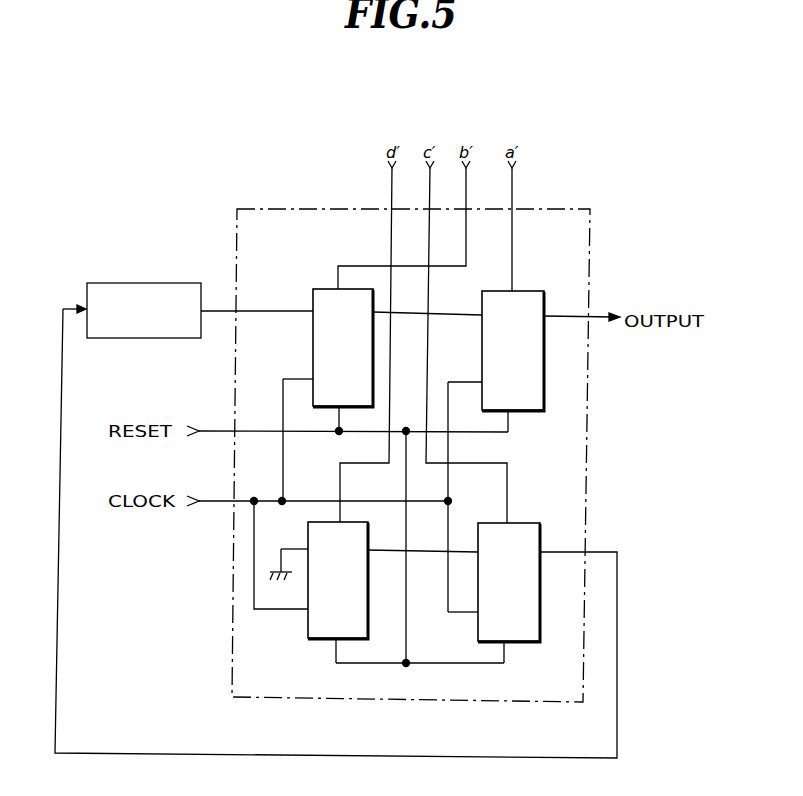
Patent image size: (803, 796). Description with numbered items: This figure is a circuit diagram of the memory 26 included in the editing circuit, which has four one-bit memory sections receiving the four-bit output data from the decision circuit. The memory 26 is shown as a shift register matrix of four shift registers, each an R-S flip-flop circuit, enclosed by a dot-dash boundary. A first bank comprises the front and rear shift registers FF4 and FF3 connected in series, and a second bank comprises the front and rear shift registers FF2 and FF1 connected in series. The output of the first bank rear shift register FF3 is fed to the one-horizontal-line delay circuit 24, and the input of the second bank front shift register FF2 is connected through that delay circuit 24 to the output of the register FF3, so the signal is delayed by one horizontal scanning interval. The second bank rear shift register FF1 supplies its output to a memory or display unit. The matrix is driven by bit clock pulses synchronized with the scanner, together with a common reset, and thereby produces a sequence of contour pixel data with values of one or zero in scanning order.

The 1H delay circuit 24 is at (141, 283).
The memory 26 is at (571, 208).
The second bank rear shift register FF1 is at (528, 291).
The second bank front shift register FF2 is at (319, 289).
The first bank rear shift register FF3 is at (520, 523).
The first bank front shift register FF4 is at (305, 628).